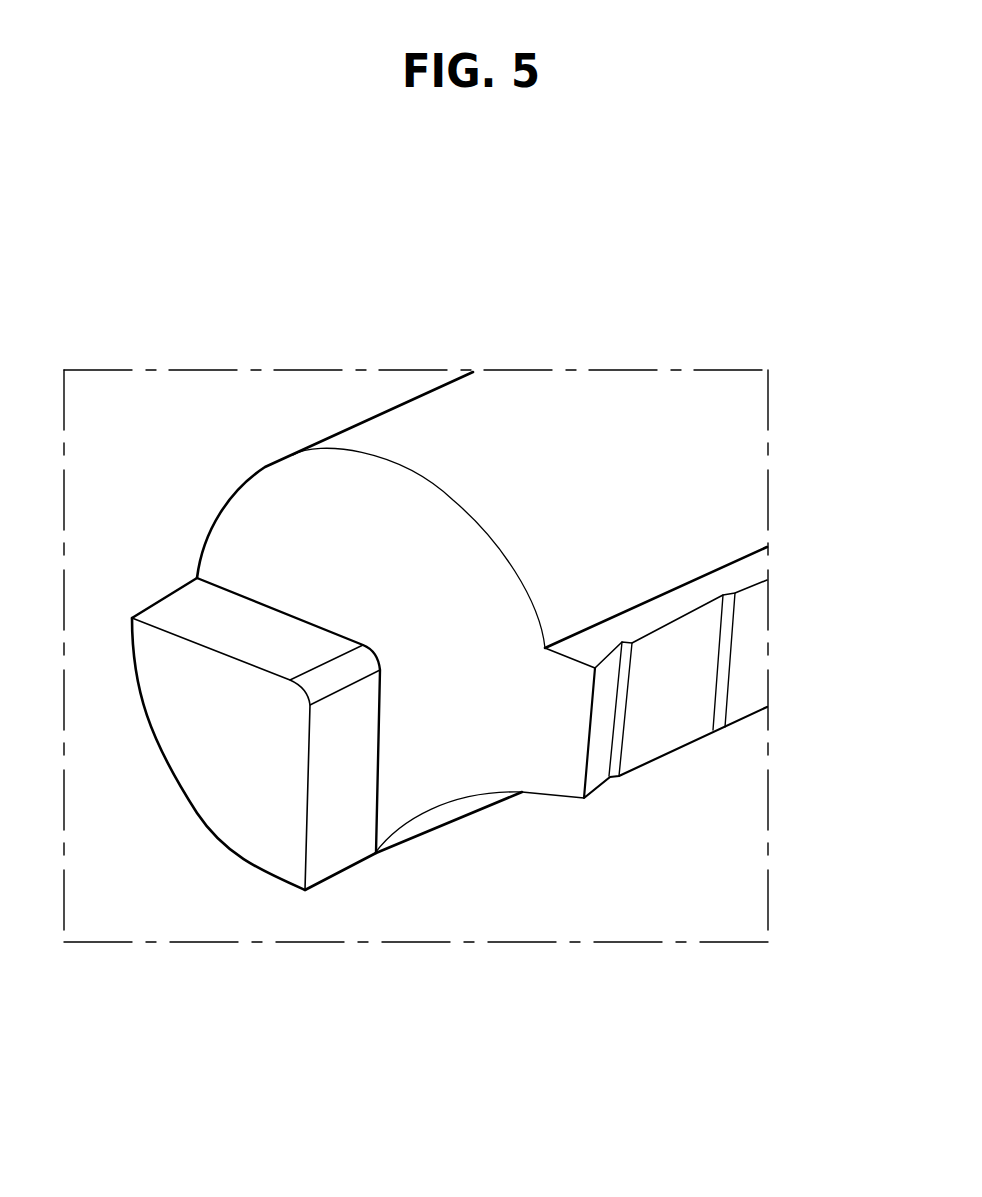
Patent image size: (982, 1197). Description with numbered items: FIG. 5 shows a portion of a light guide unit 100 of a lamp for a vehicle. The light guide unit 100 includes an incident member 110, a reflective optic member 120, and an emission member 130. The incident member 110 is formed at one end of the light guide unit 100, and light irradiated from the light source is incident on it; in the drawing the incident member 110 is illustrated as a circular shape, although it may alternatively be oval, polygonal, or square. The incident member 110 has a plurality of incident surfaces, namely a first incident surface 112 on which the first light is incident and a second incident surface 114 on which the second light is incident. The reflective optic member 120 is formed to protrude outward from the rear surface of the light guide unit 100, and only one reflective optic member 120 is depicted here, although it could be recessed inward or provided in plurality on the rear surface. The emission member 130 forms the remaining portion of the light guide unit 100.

The light guide unit 100 is at (610, 420).
The incident member 110 is at (270, 998).
The first incident surface 112 is at (420, 770).
The second incident surface 114 is at (248, 833).
The reflective optic member 120 is at (687, 720).
The emission member 130 is at (417, 395).